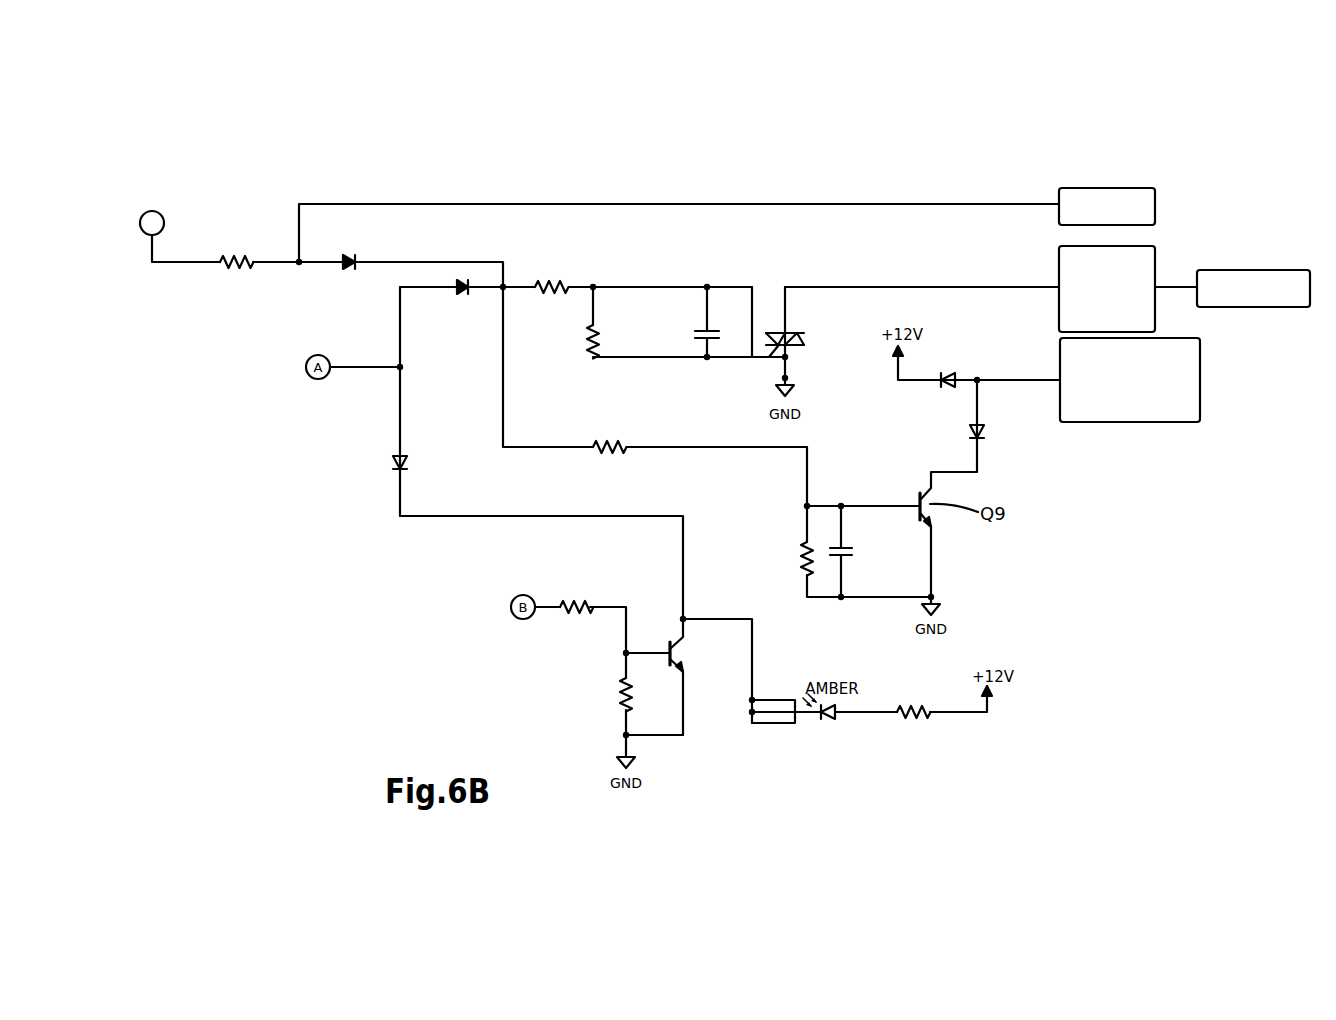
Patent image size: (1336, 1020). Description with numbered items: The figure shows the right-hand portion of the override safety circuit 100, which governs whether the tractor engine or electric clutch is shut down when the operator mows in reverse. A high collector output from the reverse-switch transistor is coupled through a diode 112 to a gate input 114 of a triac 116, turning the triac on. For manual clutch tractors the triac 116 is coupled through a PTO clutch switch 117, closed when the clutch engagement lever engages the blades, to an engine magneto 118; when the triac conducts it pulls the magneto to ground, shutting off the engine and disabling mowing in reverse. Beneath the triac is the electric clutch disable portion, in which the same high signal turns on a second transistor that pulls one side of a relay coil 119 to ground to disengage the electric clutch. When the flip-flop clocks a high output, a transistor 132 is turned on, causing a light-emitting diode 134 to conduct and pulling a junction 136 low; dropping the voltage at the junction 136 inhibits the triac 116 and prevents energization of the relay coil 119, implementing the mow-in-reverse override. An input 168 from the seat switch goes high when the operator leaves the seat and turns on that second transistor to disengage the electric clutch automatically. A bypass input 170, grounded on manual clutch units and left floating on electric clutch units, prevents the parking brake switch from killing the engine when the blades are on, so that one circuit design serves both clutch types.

The override safety circuit 100 is at (949, 159).
The diode 112 is at (459, 293).
The gate input 114 is at (763, 357).
The triac 116 is at (799, 333).
The PTO clutch switch 117 is at (1143, 263).
The engine magneto 118 is at (1256, 306).
The relay coil 119 is at (1133, 422).
The transistor 132 is at (677, 641).
The light-emitting diode 134 is at (829, 718).
The junction 136 is at (396, 373).
The input 168 is at (156, 210).
The bypass input 170 is at (1135, 190).